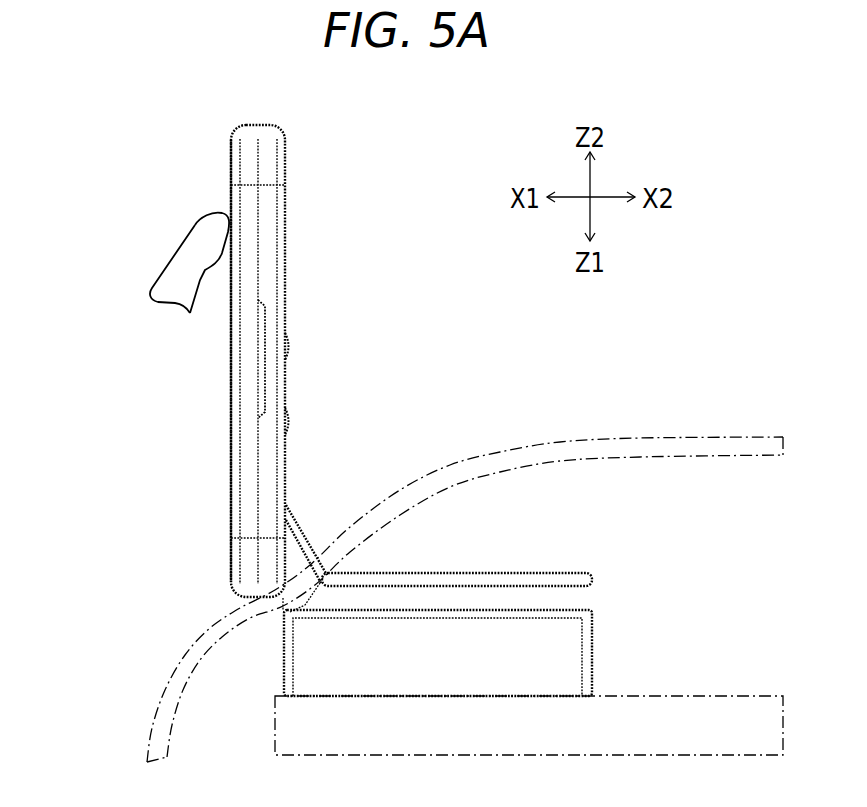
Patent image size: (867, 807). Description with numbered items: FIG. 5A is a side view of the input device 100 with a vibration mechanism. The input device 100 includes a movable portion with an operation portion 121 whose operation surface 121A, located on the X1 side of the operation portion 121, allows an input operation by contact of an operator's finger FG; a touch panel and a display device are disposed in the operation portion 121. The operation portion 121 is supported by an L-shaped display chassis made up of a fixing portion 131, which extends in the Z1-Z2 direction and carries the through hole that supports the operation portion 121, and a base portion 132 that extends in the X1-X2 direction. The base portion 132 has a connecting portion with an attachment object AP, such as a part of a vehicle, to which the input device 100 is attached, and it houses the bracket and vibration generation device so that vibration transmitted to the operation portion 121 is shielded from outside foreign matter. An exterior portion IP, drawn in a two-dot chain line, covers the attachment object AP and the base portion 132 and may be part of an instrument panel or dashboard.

The input device with a vibration mechanism 100 is at (115, 112).
The operation portion 121 is at (237, 487).
The operation surface 121A is at (228, 447).
The fixing portion 131 is at (287, 298).
The base portion 132 is at (540, 573).
The finger FG is at (185, 239).
The exterior portion IP is at (580, 437).
The attachment object AP is at (733, 700).